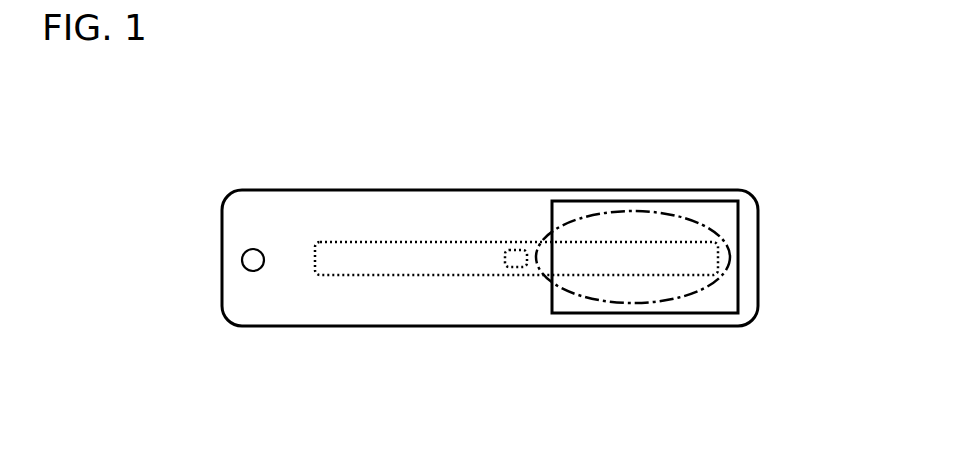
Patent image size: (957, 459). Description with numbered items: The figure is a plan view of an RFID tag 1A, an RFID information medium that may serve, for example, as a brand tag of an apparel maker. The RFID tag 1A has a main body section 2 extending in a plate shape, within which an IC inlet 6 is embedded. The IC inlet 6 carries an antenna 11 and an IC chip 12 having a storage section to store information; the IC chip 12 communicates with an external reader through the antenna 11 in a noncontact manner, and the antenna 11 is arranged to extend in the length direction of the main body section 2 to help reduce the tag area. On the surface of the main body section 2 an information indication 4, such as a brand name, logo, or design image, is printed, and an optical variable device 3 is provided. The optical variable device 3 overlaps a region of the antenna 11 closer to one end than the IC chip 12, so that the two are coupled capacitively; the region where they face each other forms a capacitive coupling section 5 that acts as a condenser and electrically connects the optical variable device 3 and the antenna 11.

The RFID tag 1A is at (191, 158).
The main body section 2 is at (233, 292).
The optical variable device 3 is at (707, 213).
The information indication 4 is at (370, 291).
The capacitive coupling section 5 is at (699, 293).
The IC inlet 6 is at (516, 181).
The antenna 11 is at (428, 242).
The IC chip 12 is at (513, 250).